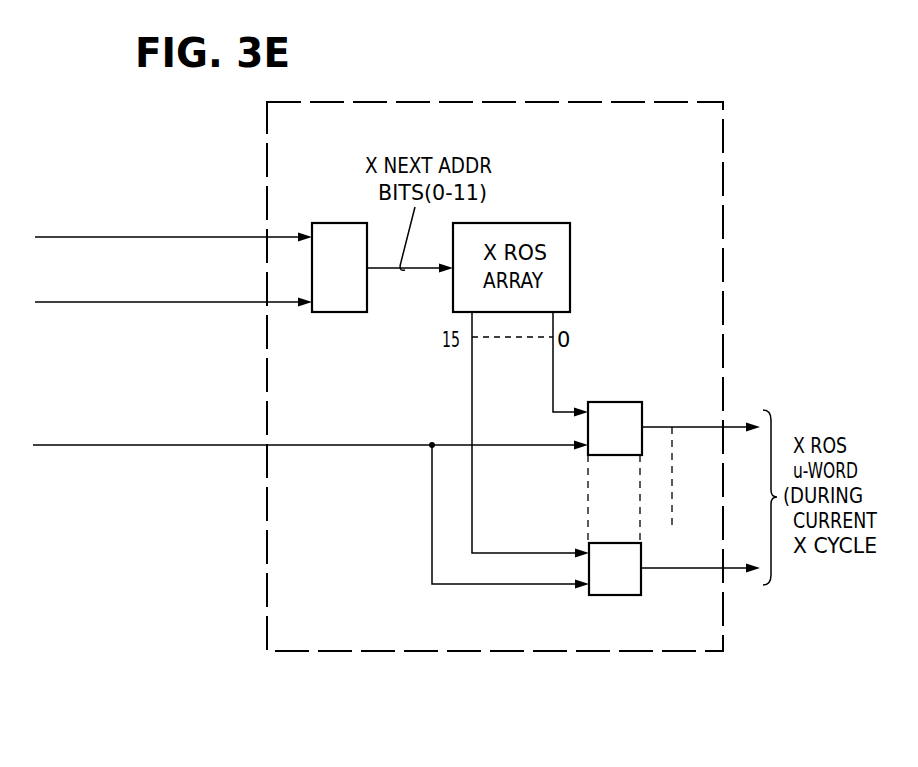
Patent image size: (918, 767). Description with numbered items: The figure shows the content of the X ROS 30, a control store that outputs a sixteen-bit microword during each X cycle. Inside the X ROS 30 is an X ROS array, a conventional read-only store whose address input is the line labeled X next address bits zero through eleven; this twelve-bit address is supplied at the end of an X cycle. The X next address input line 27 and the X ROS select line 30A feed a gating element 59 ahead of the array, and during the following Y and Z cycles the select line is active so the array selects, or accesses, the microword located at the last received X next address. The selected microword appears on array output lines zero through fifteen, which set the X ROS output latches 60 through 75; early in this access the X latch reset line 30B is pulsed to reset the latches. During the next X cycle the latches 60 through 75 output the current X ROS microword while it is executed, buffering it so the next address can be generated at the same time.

The X ROS 30 is at (577, 100).
The X next address input line 27 is at (223, 239).
The X ROS select input line 30A is at (237, 302).
The X latch reset input line 30B is at (200, 447).
The AND gate A 59 is at (335, 305).
The X ROS output latch 60 is at (625, 404).
The X ROS output latch 75 is at (628, 590).